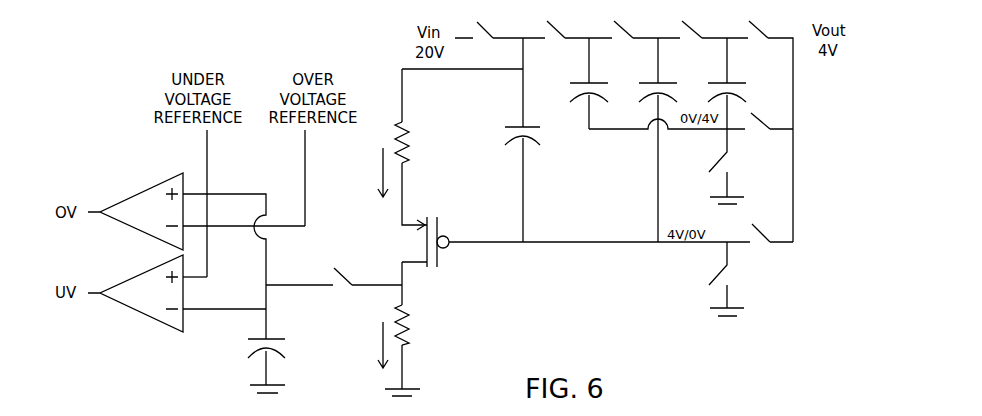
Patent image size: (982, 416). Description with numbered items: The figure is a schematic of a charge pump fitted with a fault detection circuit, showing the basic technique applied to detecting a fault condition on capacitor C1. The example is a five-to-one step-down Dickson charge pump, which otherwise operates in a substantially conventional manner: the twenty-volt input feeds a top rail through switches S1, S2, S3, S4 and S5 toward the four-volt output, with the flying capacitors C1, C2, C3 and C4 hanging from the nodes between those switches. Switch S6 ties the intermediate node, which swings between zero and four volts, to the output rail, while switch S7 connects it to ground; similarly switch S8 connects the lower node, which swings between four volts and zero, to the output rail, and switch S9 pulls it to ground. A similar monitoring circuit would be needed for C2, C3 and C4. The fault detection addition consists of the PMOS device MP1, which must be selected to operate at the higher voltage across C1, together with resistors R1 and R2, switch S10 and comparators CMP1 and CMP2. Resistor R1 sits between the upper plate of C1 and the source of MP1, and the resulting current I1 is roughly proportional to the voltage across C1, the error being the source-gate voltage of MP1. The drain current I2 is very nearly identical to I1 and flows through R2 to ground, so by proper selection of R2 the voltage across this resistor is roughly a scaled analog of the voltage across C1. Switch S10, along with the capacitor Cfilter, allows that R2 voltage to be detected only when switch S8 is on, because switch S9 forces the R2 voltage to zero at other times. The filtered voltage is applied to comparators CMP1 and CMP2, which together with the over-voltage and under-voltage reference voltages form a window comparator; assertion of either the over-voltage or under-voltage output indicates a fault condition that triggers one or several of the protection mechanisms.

The switch S1 is at (485, 40).
The switch S2 is at (557, 39).
The switch S3 is at (624, 39).
The switch S4 is at (692, 39).
The switch S5 is at (759, 38).
The switch S6 is at (772, 128).
The switch S7 is at (728, 166).
The switch S8 is at (772, 241).
The switch S9 is at (728, 279).
The switch S10 is at (334, 285).
The capacitor C1 is at (533, 184).
The capacitor C2 is at (599, 83).
The capacitor C3 is at (668, 140).
The capacitor C4 is at (737, 83).
The capacitor Cfilter is at (292, 358).
The resistor R1 is at (416, 142).
The resistor R2 is at (416, 325).
The PMOS device MP1 is at (394, 242).
The comparator CMP1 is at (135, 209).
The comparator CMP2 is at (135, 291).
The current I1 is at (379, 172).
The current I2 is at (377, 345).